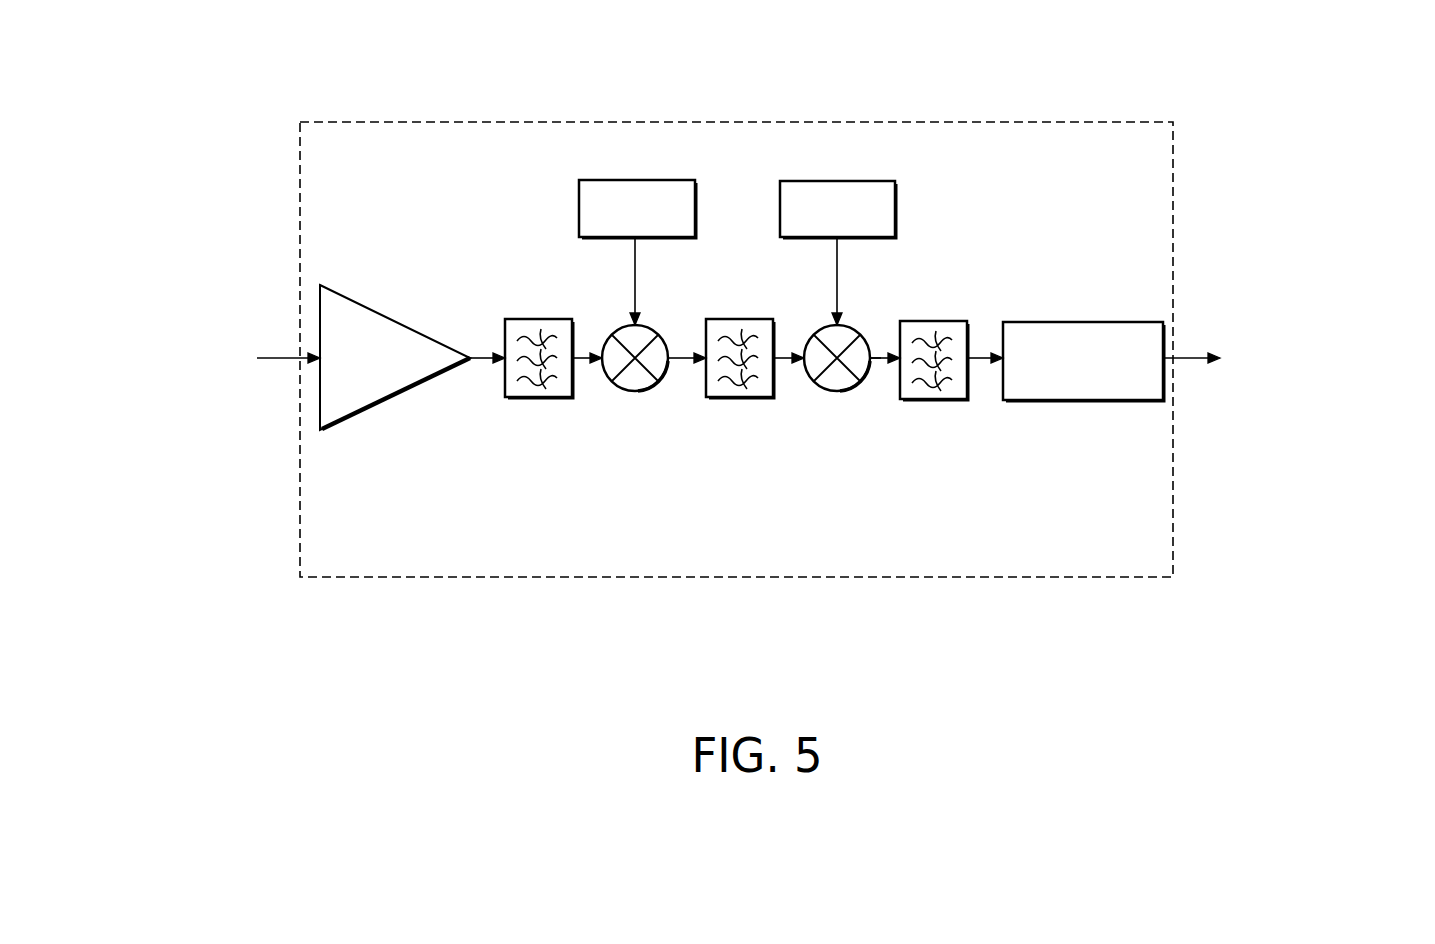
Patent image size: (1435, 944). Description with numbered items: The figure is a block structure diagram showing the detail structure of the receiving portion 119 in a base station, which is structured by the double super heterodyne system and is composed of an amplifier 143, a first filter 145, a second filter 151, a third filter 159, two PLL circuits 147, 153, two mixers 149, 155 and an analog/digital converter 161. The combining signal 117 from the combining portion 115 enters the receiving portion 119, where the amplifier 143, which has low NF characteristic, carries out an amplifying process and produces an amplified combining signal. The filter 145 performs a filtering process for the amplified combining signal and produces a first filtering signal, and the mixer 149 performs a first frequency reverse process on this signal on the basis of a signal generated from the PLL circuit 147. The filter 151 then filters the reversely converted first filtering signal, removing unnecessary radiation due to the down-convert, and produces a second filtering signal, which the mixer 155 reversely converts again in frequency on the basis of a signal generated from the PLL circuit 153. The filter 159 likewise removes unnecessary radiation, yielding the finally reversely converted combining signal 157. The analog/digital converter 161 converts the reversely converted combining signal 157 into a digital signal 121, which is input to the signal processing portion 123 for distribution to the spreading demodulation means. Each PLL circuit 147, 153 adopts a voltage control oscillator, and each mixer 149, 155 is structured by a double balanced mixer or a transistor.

The receiving portion 119 is at (480, 122).
The combining signal 117 is at (277, 356).
The combining portion 115 is at (168, 355).
The amplifier 143 is at (377, 305).
The filter 145 is at (533, 319).
The PLL circuit 147 is at (579, 212).
The mixer 149 is at (633, 392).
The filter 151 is at (733, 319).
The PLL circuit 153 is at (780, 210).
The mixer 155 is at (855, 328).
The combining signal 157 is at (961, 454).
The filter 159 is at (932, 321).
The analog/digital converter 161 is at (1100, 322).
The digital signal 121 is at (1195, 357).
The signal processing portion 123 is at (1298, 363).